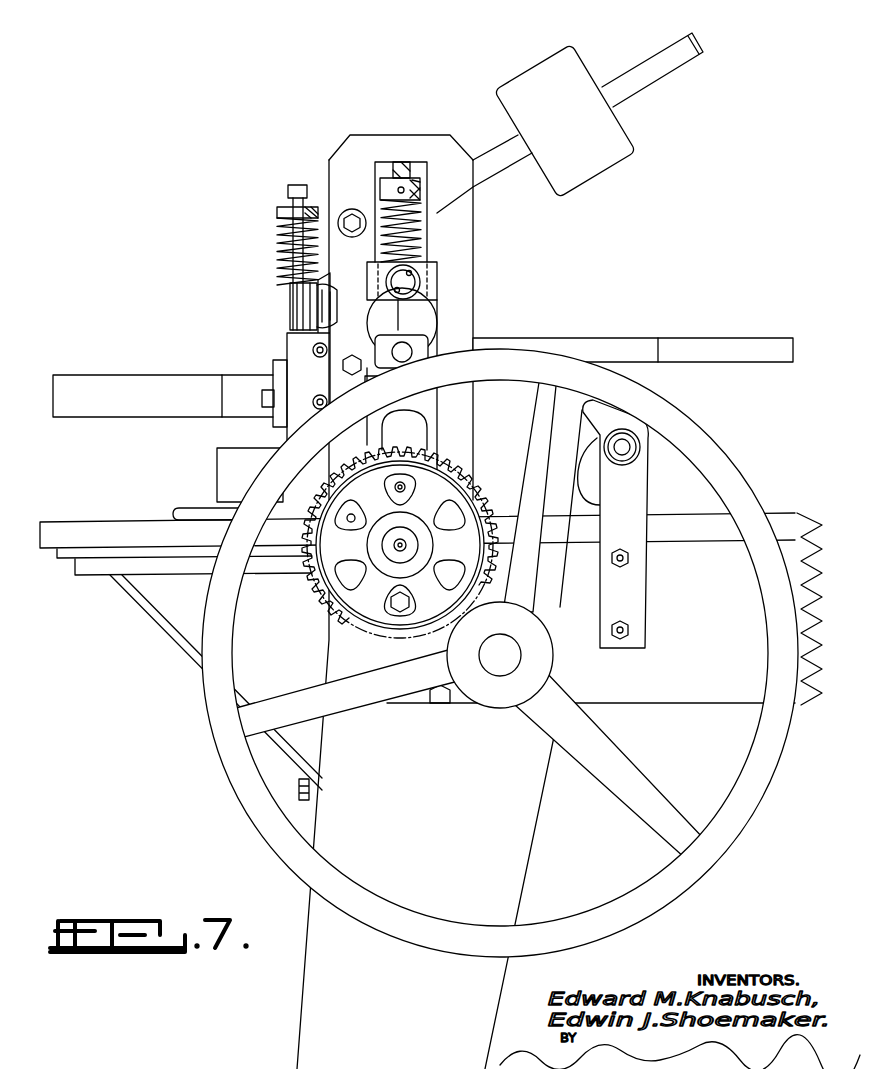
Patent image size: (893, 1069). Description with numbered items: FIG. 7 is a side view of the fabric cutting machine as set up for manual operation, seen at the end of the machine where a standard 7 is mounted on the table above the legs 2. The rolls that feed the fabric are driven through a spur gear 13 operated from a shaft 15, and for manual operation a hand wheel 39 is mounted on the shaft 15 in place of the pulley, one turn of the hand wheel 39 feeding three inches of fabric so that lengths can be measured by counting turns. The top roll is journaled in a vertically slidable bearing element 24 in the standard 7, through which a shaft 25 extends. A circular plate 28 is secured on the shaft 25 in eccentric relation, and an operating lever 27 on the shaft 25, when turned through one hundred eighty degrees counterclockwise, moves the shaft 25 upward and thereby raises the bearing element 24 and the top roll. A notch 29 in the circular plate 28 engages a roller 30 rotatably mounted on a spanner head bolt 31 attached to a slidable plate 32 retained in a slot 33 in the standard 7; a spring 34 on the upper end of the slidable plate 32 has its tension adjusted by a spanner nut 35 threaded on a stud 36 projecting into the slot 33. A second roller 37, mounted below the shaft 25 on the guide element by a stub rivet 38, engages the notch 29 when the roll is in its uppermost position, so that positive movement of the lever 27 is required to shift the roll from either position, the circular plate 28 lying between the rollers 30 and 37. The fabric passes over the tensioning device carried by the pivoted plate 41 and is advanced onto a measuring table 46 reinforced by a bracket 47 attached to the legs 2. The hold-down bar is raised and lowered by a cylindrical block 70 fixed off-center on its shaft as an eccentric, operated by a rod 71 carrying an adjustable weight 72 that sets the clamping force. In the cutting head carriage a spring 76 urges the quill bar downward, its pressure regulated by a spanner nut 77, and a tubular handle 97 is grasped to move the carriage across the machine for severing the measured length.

The legs 2 is at (300, 986).
The standard 7 is at (352, 136).
The spur gear 13 is at (312, 603).
The shaft 15 is at (500, 665).
The slidable bearing element 24 is at (428, 433).
The shaft 25 is at (425, 347).
The operating lever 27 is at (628, 340).
The circular plate 28 is at (432, 325).
The notch 29 is at (397, 317).
The roller 30 is at (437, 268).
The spanner head bolt 31 is at (415, 292).
The slidable plate 32 is at (406, 281).
The slot 33 is at (427, 163).
The spring 34 is at (392, 214).
The spanner nut 35 is at (383, 182).
The stud 36 is at (401, 163).
The second roller 37 is at (400, 407).
The stub rivet 38 is at (404, 430).
The hand wheel 39 is at (500, 653).
The plate 41 is at (598, 440).
The measuring table 46 is at (130, 522).
The bracket 47 is at (160, 620).
The cylindrical block 70 is at (327, 272).
The rod 71 is at (655, 56).
The adjustable weight 72 is at (532, 65).
The spring 76 is at (277, 256).
The spanner nut 77 is at (277, 213).
The tubular handle 97 is at (112, 376).